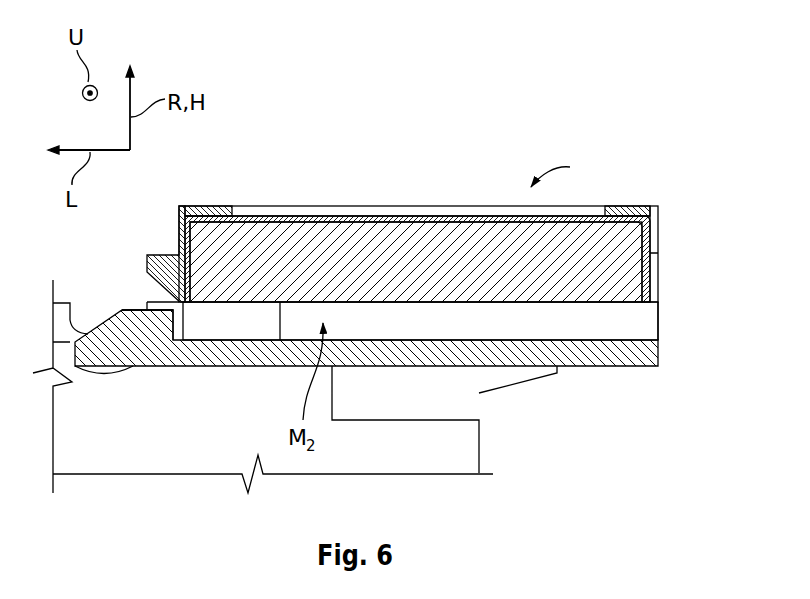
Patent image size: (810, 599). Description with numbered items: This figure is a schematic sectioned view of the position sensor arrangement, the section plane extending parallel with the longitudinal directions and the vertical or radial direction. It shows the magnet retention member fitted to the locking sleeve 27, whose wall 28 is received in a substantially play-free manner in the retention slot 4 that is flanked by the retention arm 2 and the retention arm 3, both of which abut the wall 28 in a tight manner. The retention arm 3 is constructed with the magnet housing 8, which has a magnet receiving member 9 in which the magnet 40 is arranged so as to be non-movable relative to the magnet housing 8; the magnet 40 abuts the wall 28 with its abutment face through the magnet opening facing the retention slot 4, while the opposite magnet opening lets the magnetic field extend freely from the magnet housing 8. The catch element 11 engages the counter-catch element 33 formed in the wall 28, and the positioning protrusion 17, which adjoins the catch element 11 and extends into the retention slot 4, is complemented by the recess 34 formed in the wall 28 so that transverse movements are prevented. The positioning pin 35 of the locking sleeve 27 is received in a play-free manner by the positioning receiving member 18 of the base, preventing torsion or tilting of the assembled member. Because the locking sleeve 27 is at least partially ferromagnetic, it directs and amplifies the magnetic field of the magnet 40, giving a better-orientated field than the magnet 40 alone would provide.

The retention arm 2 is at (230, 350).
The retention arm 3 is at (627, 212).
The retention slot 4 is at (472, 319).
The positioning receiving member 18 is at (668, 324).
The magnet housing 8 is at (402, 224).
The magnet receiving member 9 is at (379, 189).
The catch element 11 is at (115, 355).
The positioning protrusion 17 is at (160, 339).
The locking sleeve 27 is at (480, 432).
The wall 28 is at (417, 333).
The counter-catch element 33 is at (124, 300).
The recess 34 is at (146, 300).
The positioning pin 35 is at (630, 333).
The magnet 40 is at (247, 242).